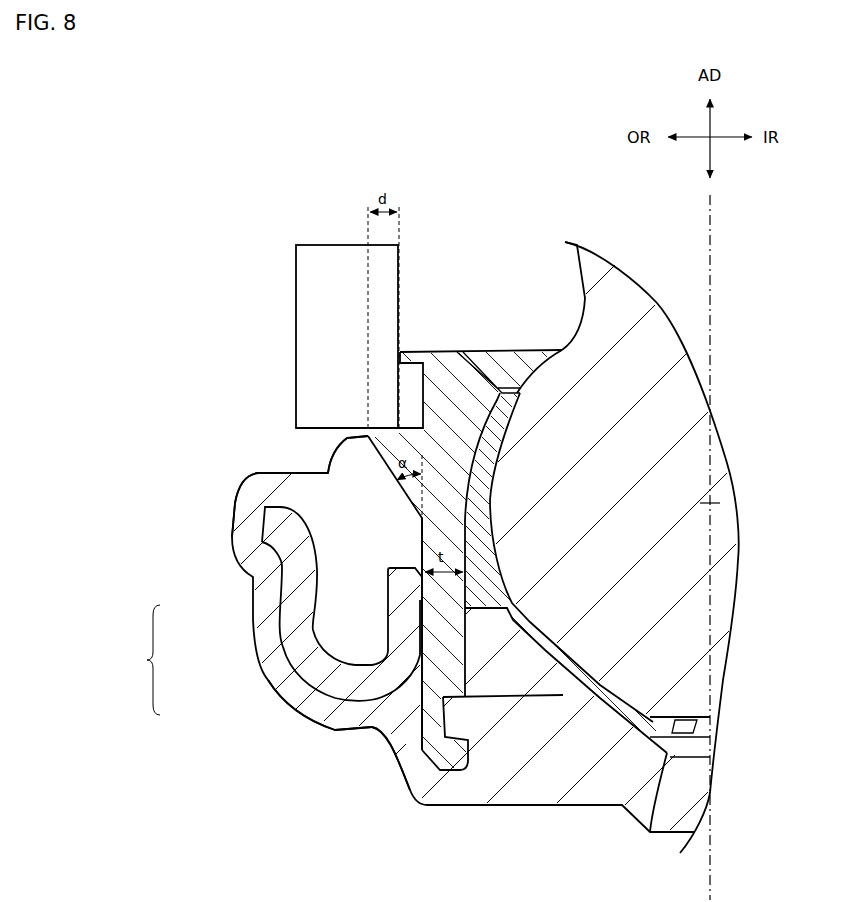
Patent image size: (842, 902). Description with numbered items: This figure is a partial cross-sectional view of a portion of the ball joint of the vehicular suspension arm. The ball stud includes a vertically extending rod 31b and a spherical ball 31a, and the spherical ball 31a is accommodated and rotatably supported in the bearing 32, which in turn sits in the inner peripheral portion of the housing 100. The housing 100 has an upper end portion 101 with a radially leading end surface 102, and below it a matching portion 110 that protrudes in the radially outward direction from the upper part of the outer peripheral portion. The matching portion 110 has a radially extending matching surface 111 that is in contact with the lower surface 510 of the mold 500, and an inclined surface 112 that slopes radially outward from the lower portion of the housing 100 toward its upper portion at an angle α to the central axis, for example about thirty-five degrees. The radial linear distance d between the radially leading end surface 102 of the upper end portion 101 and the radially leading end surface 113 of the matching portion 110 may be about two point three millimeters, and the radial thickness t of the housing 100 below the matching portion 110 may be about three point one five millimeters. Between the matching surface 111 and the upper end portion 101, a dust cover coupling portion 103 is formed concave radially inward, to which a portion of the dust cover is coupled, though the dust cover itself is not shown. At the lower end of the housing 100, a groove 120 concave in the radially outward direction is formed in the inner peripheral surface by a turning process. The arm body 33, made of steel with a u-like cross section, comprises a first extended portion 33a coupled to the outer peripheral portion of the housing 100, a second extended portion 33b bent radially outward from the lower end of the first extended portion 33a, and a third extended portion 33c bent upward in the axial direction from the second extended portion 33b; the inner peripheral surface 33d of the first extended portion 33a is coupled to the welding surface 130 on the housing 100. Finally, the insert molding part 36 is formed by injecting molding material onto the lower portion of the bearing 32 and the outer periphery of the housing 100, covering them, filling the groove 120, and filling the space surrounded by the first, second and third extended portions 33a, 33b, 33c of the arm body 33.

The mold 500 is at (322, 255).
The lower surface 510 is at (312, 432).
The housing 100 is at (440, 597).
The upper end portion 101 is at (433, 350).
The radially leading end surface 102 is at (400, 353).
The dust cover coupling portion 103 is at (423, 392).
The matching portion 110 is at (377, 428).
The matching surface 111 is at (393, 427).
The inclined surface 112 is at (258, 475).
The radially leading end surface 113 is at (375, 437).
The groove 120 is at (422, 757).
The welding surface 130 is at (373, 730).
The spherical ball 31a is at (733, 462).
The rod 31b is at (640, 292).
The bearing 32 is at (650, 832).
The arm body 33 is at (277, 585).
The first extended portion 33a is at (287, 650).
The second extended portion 33b is at (308, 717).
The third extended portion 33c is at (297, 607).
The inner peripheral surface 33d is at (387, 733).
The insert molding part 36 is at (518, 792).